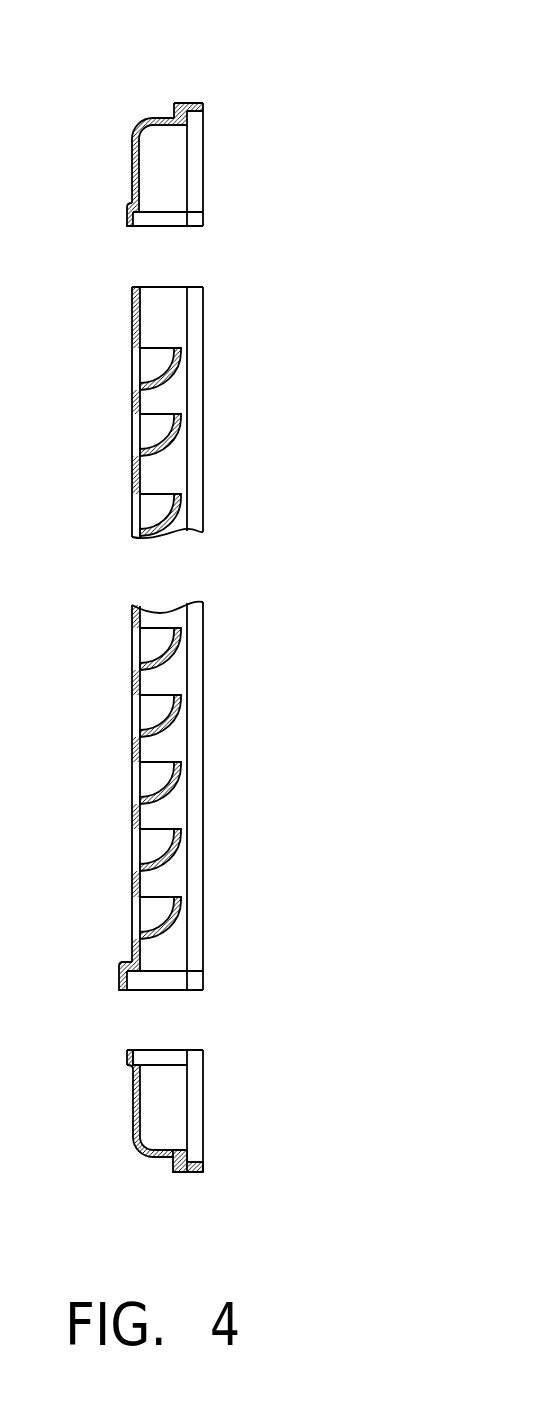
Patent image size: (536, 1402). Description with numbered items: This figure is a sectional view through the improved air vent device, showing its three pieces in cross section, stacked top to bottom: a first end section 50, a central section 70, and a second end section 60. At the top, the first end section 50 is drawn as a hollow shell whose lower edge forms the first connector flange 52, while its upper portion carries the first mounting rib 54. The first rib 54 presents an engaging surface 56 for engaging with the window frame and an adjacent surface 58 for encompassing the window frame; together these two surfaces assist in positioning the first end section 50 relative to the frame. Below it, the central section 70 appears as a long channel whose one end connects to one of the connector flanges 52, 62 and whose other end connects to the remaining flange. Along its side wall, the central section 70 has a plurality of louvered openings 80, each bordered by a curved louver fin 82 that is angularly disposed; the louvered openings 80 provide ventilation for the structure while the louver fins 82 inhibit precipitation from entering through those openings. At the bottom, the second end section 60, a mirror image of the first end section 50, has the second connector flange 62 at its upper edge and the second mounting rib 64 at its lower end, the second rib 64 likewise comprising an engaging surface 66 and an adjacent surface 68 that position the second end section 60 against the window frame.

The first end section 50 is at (174, 123).
The first connector flange 52 is at (129, 215).
The first mounting rib 54 is at (184, 103).
The engaging surface 56 is at (200, 102).
The adjacent surface 58 is at (202, 117).
The second end section 60 is at (192, 1146).
The second connector flange 62 is at (130, 1063).
The second mounting rib 64 is at (176, 1163).
The engaging surface 66 is at (189, 1172).
The adjacent surface 68 is at (204, 1161).
The central section 70 is at (190, 302).
The louvered openings 80 is at (152, 363).
The louver fins 82 is at (178, 362).